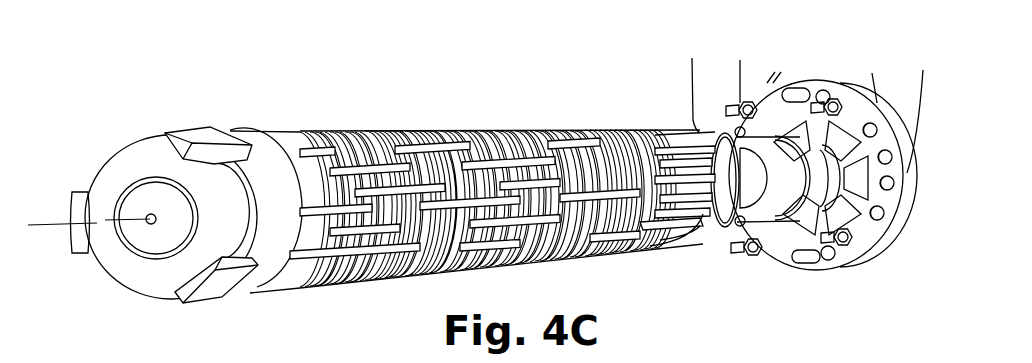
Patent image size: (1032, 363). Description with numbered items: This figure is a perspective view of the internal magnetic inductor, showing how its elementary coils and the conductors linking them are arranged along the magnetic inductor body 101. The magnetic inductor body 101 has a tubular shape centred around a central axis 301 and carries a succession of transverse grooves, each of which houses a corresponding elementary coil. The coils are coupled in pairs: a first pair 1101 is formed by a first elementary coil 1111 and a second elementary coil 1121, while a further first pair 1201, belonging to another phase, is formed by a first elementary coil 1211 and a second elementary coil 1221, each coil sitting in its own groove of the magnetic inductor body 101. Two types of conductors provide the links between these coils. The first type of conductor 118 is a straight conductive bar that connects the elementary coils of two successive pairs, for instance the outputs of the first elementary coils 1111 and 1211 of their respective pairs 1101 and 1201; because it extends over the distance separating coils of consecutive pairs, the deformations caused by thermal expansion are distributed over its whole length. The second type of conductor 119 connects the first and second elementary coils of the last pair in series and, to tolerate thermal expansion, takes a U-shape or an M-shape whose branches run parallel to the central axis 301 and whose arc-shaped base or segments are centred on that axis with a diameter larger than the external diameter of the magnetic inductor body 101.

The central axis 301 is at (40, 227).
The magnetic inductor body 101 is at (188, 160).
The second type of conductor 119 is at (302, 132).
The first type of conductor 118 is at (585, 128).
The first pair of elementary coils 1101 is at (649, 124).
The first elementary coil 1111 is at (640, 128).
The second elementary coil 1121 is at (617, 128).
The first pair of elementary coils 1201 is at (668, 282).
The first elementary coil 1211 is at (690, 258).
The second elementary coil 1221 is at (660, 225).